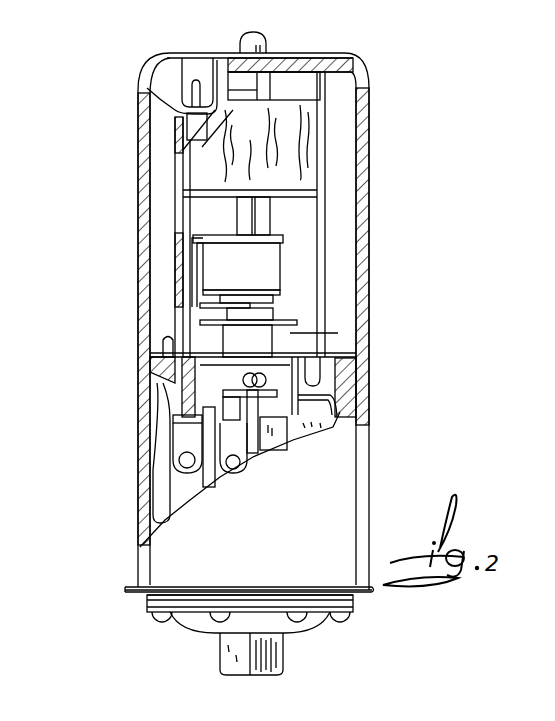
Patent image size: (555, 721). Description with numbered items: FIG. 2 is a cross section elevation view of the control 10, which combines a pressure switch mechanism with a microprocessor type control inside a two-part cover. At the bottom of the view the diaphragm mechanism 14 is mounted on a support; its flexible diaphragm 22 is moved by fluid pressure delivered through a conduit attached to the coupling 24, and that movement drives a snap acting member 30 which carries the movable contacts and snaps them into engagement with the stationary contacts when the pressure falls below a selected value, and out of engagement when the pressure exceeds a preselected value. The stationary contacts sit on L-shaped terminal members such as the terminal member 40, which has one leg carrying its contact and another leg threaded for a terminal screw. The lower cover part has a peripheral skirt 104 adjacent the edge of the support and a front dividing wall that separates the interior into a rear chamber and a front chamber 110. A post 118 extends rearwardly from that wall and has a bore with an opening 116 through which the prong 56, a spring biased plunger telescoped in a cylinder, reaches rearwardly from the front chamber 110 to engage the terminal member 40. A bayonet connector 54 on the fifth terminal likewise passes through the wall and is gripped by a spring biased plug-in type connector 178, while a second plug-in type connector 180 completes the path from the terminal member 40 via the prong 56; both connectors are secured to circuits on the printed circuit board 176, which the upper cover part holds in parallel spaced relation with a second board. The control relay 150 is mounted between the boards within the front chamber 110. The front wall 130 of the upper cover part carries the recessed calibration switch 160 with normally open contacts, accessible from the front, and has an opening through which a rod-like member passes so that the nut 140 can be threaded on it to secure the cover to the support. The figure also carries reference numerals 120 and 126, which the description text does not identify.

The control 10 is at (122, 181).
The diaphragm mechanism 14 is at (200, 620).
The flexible diaphragm 22 is at (147, 600).
The coupling 24 is at (263, 663).
The member 30 is at (297, 320).
The terminal member 40 is at (173, 420).
The bayonet connector 54 is at (358, 398).
The prong 56 is at (182, 405).
The peripheral skirt 104 is at (125, 589).
The front chamber 110 is at (167, 120).
The opening 116 is at (205, 360).
The post 118 is at (158, 380).
The frame 120 is at (150, 366).
The liner 126 is at (175, 222).
The front wall 130 is at (227, 53).
The nut 140 is at (263, 34).
The control relay 150 is at (175, 277).
The recessed calibration switch 160 is at (150, 88).
The printed circuit board 176 is at (317, 238).
The plug-in type connector 178 is at (337, 381).
The plug-in type connector 180 is at (167, 349).